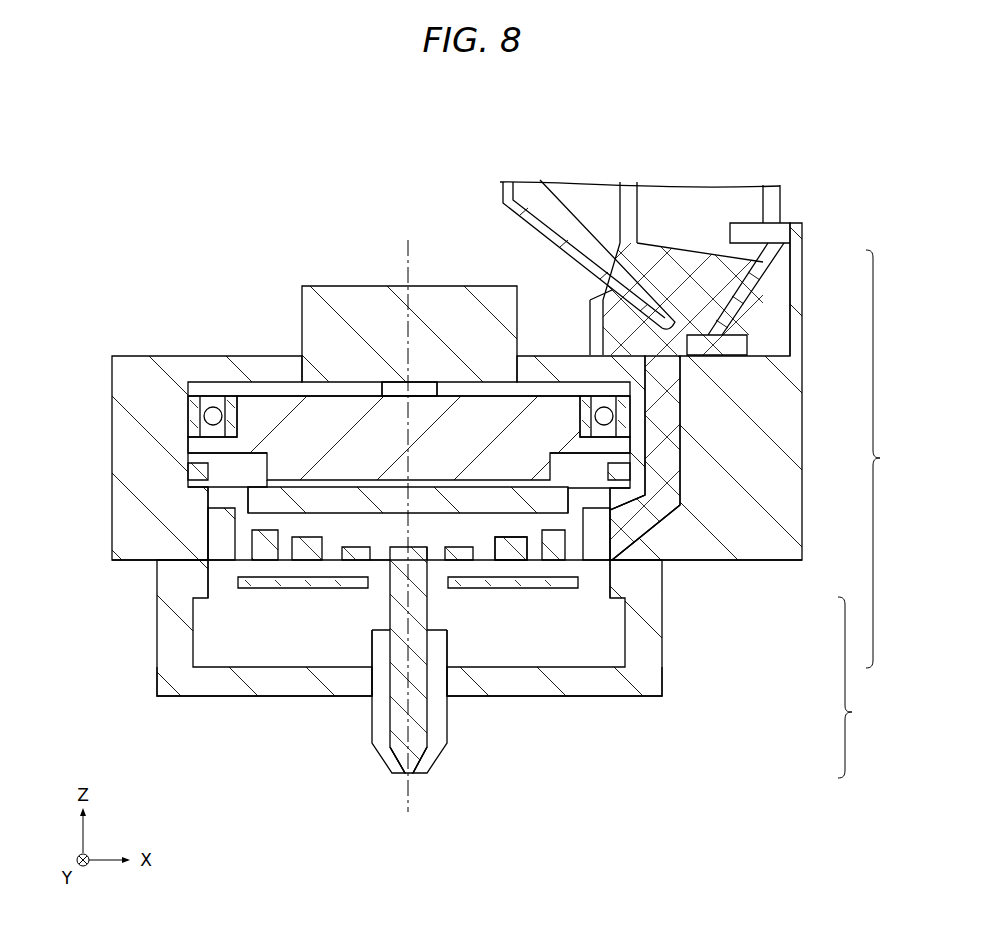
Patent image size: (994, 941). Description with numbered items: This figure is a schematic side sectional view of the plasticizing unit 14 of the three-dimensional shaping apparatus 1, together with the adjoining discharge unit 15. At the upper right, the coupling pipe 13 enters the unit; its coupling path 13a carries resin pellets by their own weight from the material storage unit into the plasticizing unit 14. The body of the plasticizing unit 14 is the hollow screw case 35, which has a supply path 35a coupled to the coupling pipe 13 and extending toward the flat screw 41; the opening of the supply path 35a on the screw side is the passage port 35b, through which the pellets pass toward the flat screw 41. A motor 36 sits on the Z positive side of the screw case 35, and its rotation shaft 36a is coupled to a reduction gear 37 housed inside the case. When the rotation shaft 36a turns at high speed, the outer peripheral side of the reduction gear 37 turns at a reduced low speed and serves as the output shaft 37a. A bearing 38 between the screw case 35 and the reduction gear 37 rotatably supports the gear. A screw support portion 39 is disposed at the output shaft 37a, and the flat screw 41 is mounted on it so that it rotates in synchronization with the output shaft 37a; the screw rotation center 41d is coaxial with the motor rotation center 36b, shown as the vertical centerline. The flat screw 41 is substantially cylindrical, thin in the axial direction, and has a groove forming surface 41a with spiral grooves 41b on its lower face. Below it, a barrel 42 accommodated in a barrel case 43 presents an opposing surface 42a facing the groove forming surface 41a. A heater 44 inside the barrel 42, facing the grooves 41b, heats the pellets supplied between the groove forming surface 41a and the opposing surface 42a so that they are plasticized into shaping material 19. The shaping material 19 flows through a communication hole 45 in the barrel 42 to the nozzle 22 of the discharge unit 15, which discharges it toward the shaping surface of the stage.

The three-dimensional shaping apparatus 1 is at (818, 123).
The coupling pipe 13 is at (622, 215).
The coupling path 13a is at (646, 205).
The plasticizing unit 14 is at (887, 459).
The discharge unit 15 is at (858, 687).
The shaping material 19 is at (402, 731).
The nozzle 22 is at (445, 740).
The screw case 35 is at (118, 377).
The supply path 35a is at (684, 413).
The passage port 35b is at (618, 538).
The motor 36 is at (328, 302).
The rotation shaft 36a is at (436, 388).
The motor rotation center 36b is at (412, 248).
The reduction gear 37 is at (290, 420).
The output shaft 37a is at (193, 443).
The bearing 38 is at (220, 402).
The screw support portion 39 is at (277, 503).
The flat screw 41 is at (329, 536).
The groove forming surface 41a is at (498, 552).
The grooves 41b is at (355, 562).
The screw rotation center 41d is at (430, 545).
The barrel 42 is at (450, 556).
The opposing surface 42a is at (378, 560).
The barrel case 43 is at (655, 682).
The heater 44 is at (245, 583).
The communication hole 45 is at (397, 618).